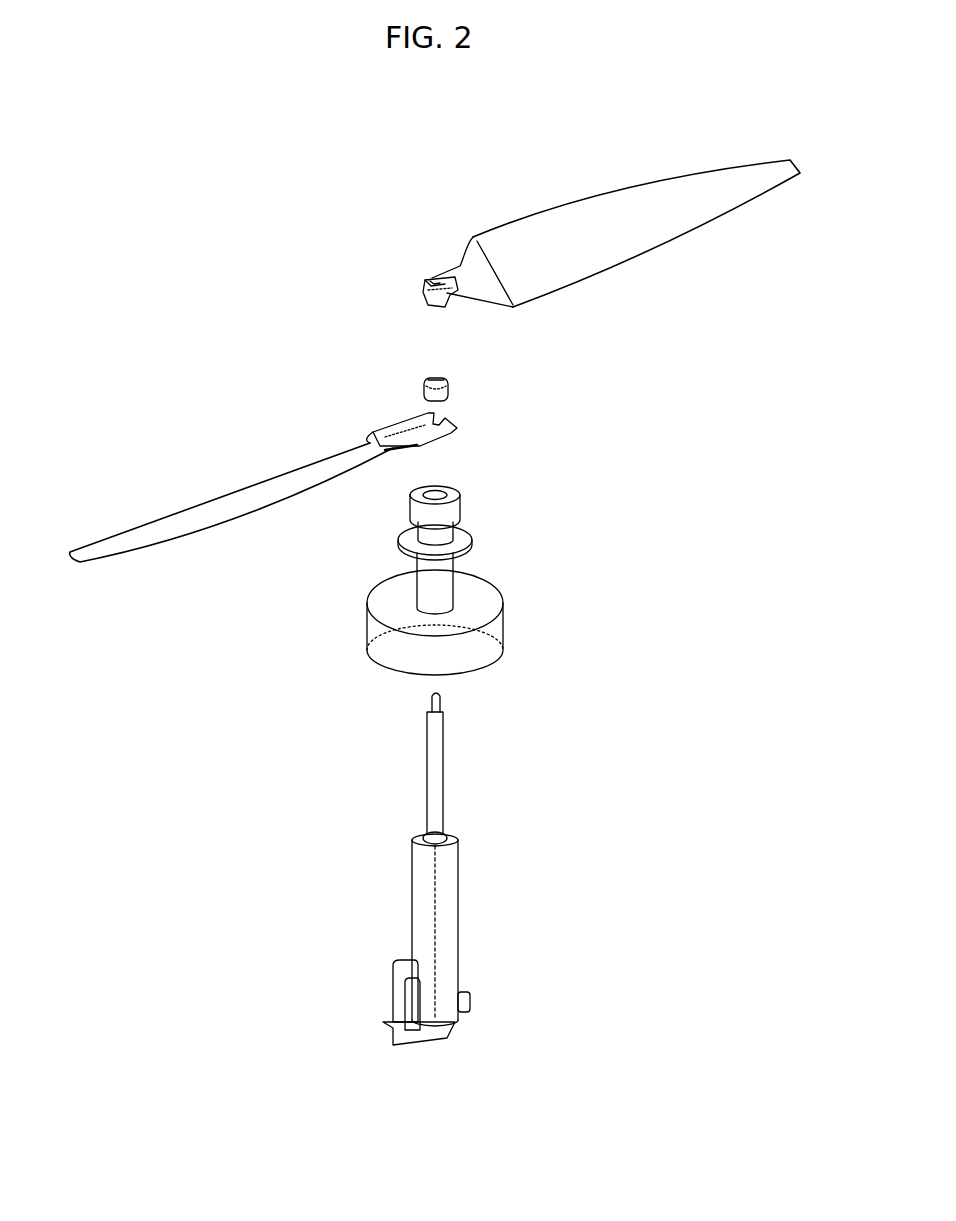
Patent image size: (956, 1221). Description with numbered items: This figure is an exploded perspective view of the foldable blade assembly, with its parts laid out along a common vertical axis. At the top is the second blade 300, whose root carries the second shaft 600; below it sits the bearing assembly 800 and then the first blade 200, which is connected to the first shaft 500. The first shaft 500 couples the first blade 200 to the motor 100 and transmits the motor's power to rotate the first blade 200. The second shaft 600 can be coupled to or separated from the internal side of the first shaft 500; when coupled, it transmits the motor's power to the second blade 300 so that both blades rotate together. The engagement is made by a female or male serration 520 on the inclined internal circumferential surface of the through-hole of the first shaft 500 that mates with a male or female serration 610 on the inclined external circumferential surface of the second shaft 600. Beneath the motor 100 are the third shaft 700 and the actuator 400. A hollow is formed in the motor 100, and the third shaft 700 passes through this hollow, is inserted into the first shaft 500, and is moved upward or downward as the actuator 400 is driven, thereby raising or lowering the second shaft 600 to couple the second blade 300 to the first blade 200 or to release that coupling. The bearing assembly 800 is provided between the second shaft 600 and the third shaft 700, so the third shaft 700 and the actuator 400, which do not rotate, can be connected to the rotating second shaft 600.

The motor 100 is at (493, 630).
The first blade 200 is at (175, 515).
The second blade 300 is at (620, 207).
The actuator 400 is at (448, 935).
The first shaft 500 is at (463, 532).
The serration 520 is at (427, 460).
The second shaft 600 is at (450, 310).
The serration 610 is at (427, 302).
The third shaft 700 is at (440, 780).
The bearing assembly 800 is at (448, 390).